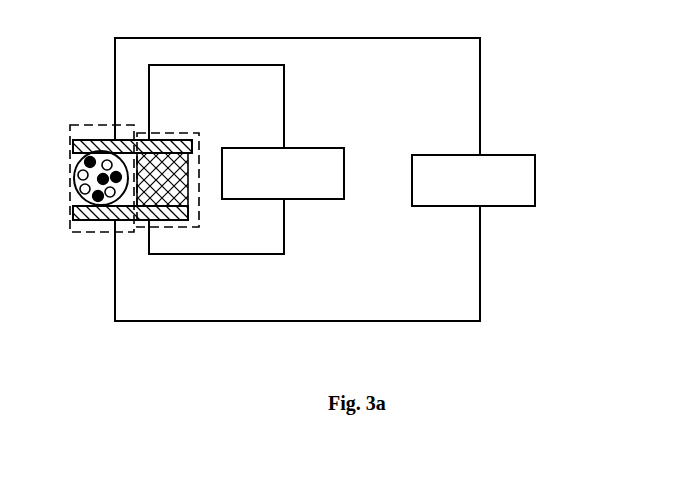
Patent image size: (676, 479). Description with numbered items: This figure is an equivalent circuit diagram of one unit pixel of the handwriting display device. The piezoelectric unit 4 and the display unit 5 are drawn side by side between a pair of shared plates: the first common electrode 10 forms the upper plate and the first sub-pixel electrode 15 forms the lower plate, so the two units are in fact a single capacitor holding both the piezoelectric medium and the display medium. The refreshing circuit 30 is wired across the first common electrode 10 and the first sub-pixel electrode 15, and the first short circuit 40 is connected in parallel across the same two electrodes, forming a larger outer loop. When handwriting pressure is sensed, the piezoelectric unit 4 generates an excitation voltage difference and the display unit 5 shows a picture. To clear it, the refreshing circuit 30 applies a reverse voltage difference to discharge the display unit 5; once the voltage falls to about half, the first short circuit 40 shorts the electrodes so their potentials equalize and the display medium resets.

The display unit 5 is at (102, 125).
The piezoelectric unit 4 is at (161, 132).
The first common electrode 10 is at (193, 133).
The first sub-pixel electrode 15 is at (183, 222).
The refreshing circuit 30 is at (317, 190).
The first short circuit 40 is at (507, 200).